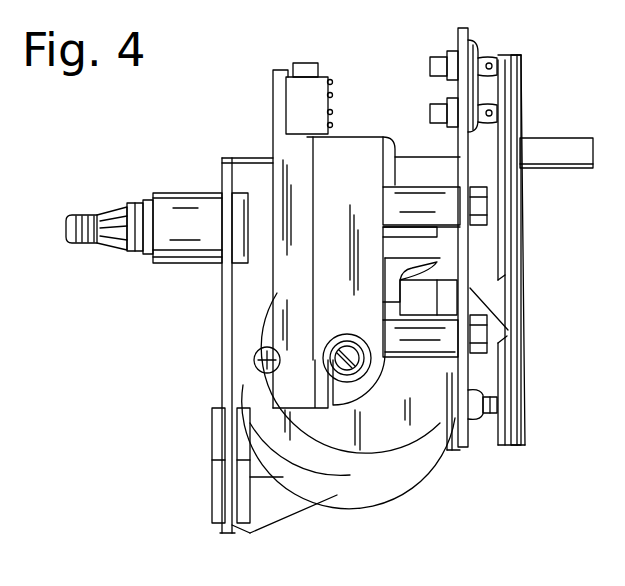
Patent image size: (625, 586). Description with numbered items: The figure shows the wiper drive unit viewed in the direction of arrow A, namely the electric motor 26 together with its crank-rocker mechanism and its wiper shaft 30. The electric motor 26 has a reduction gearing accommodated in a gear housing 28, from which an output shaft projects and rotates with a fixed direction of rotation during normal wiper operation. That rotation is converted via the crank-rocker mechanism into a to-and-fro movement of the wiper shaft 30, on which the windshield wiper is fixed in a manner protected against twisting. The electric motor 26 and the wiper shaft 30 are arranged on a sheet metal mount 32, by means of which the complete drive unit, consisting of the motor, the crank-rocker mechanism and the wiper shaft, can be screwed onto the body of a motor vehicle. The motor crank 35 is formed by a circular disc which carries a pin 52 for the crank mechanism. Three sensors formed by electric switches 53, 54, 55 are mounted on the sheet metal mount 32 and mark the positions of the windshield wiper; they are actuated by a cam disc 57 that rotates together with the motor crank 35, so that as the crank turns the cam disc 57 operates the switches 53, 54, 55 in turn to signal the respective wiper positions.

The electric motor 26 is at (392, 472).
The gear housing 28 is at (358, 158).
The wiper shaft 30 is at (81, 215).
The sheet metal mount 32 is at (228, 368).
The motor crank 35 is at (523, 260).
The pin 52 is at (557, 151).
The electric switch 53 is at (470, 50).
The electric switch 54 is at (470, 100).
The electric switch 55 is at (481, 418).
The cam disc 57 is at (500, 242).